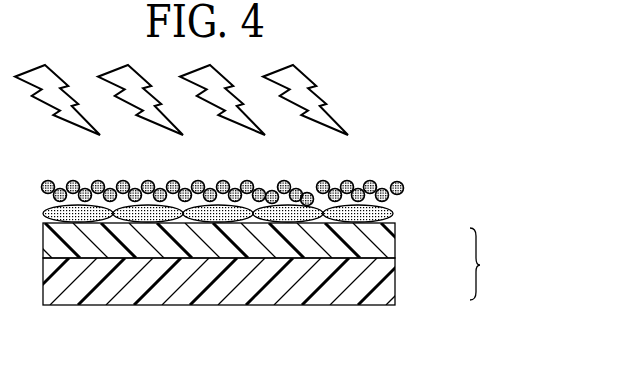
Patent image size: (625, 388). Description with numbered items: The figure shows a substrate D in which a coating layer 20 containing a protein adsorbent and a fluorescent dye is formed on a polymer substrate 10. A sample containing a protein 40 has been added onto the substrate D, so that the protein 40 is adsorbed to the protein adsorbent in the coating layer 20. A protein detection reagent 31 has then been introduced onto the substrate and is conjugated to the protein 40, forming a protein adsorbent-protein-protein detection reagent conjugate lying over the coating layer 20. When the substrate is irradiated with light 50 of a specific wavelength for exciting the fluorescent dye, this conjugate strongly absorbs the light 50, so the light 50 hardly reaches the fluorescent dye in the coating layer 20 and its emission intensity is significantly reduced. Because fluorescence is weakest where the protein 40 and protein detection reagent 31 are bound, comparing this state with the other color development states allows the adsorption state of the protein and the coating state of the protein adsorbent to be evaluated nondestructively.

The polymer substrate 10 is at (397, 287).
The coating layer 20 is at (397, 242).
The protein detection reagent 31 is at (402, 185).
The protein 40 is at (393, 212).
The light 50 is at (332, 115).
The substrate D is at (488, 264).